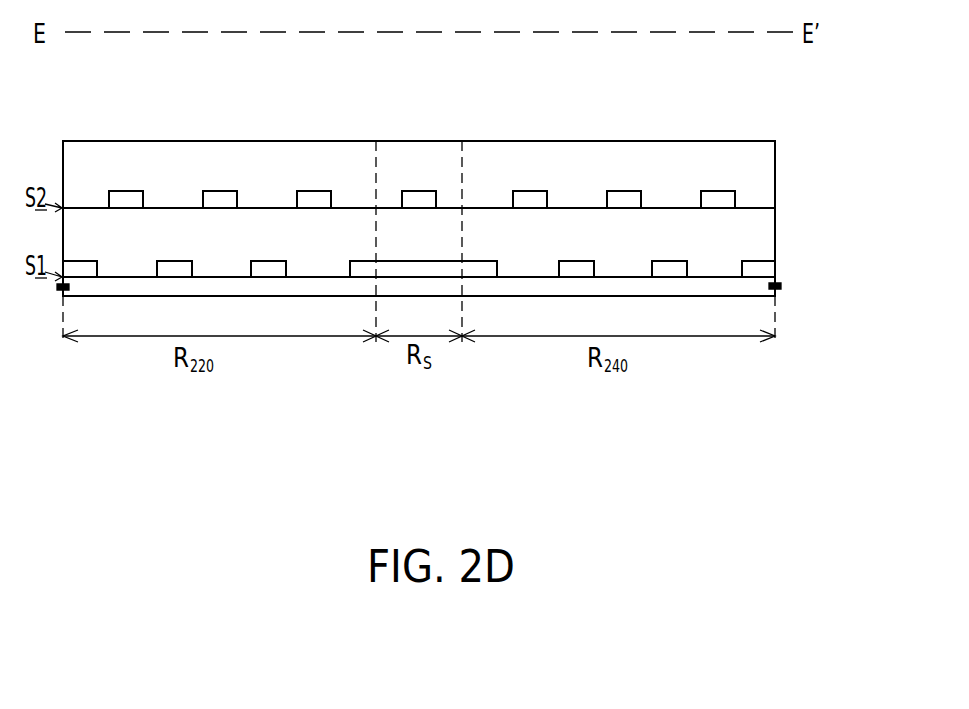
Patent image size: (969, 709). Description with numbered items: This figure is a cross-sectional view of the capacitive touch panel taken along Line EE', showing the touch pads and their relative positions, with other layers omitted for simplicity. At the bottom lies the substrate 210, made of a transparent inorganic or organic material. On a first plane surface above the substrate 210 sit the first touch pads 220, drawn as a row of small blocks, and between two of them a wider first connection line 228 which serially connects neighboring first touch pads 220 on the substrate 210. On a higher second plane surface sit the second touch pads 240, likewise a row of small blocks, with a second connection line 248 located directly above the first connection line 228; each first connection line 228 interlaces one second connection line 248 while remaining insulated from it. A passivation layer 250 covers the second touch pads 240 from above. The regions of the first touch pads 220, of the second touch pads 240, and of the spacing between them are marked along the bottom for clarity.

The substrate 210 is at (757, 288).
The first touch pads 220 is at (83, 268).
The first connection lines 228 is at (386, 268).
The second touch pads 240 is at (125, 199).
The second connection lines 248 is at (417, 199).
The passivation layer 250 is at (748, 166).